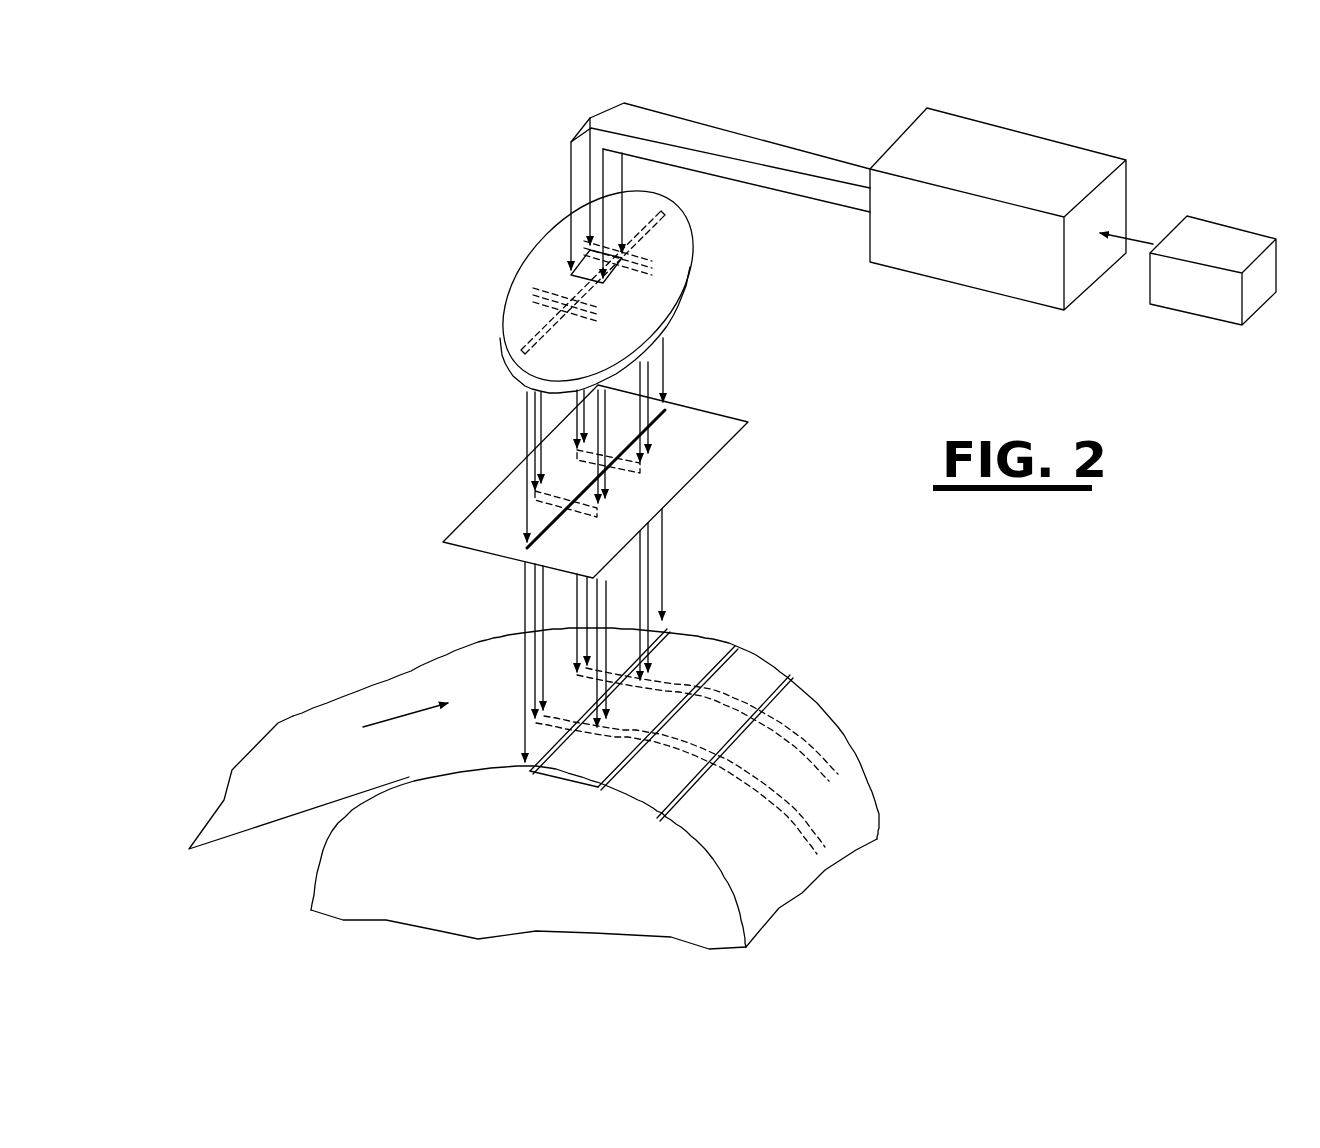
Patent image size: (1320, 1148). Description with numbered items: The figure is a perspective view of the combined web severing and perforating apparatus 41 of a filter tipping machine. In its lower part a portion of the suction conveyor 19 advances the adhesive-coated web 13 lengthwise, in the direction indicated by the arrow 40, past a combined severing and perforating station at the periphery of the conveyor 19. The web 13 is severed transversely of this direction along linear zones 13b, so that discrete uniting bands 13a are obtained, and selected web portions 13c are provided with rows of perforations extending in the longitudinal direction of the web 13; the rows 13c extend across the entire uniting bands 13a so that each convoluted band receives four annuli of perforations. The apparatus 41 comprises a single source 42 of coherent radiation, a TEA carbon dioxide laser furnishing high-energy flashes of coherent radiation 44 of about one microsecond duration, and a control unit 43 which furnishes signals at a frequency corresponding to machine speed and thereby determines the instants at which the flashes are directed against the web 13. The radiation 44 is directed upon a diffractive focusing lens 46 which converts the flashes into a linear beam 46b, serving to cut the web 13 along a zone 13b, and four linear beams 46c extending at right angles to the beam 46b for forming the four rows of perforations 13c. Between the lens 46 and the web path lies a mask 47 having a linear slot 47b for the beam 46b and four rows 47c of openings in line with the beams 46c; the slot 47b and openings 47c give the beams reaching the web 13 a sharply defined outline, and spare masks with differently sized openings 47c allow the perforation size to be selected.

The web 13 is at (513, 717).
The uniting band 13a is at (633, 793).
The linear severing zone 13b is at (733, 647).
The row of perforations 13c is at (660, 682).
The suction conveyor 19 is at (462, 893).
The arrow 40 is at (395, 728).
The combined web severing and perforating apparatus 41 is at (606, 466).
The source of coherent radiation 42 is at (1057, 155).
The control unit 43 is at (1227, 240).
The coherent radiation 44 is at (570, 158).
The diffractive focusing lens 46 is at (598, 285).
The linear beam 46b is at (668, 222).
The linear beams 46c is at (655, 262).
The mask 47 is at (606, 466).
The slot 47b is at (665, 412).
The rows of openings 47c is at (553, 492).